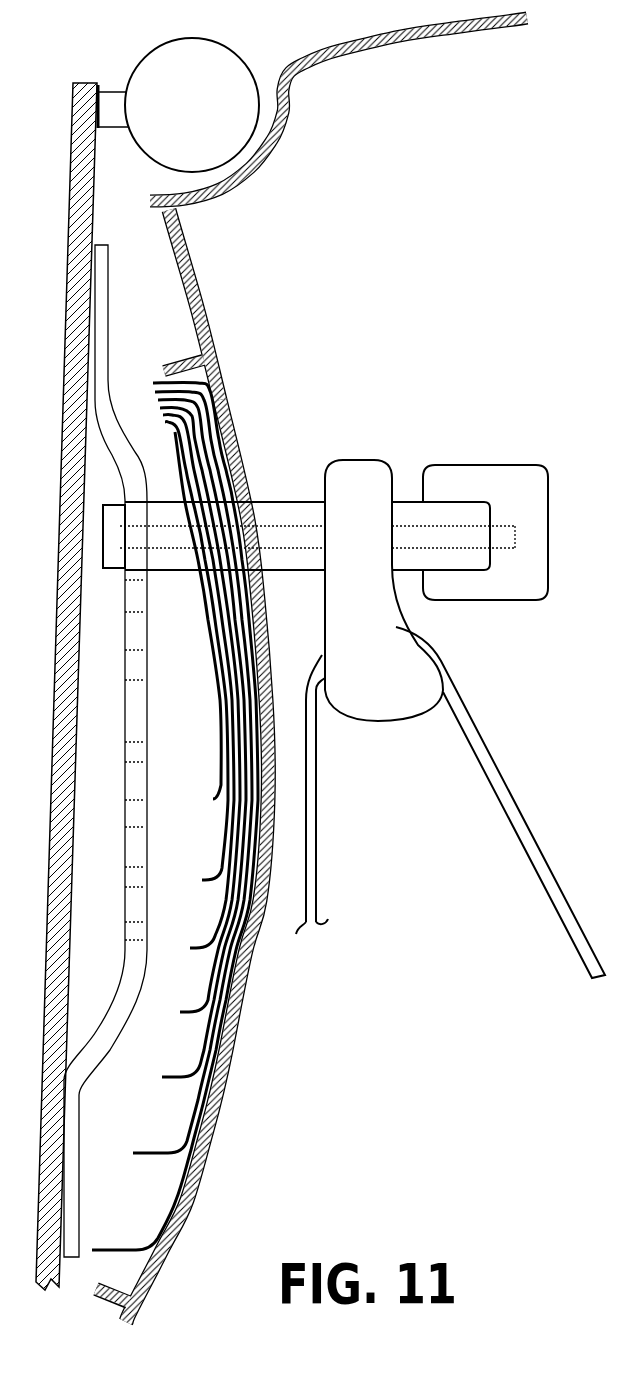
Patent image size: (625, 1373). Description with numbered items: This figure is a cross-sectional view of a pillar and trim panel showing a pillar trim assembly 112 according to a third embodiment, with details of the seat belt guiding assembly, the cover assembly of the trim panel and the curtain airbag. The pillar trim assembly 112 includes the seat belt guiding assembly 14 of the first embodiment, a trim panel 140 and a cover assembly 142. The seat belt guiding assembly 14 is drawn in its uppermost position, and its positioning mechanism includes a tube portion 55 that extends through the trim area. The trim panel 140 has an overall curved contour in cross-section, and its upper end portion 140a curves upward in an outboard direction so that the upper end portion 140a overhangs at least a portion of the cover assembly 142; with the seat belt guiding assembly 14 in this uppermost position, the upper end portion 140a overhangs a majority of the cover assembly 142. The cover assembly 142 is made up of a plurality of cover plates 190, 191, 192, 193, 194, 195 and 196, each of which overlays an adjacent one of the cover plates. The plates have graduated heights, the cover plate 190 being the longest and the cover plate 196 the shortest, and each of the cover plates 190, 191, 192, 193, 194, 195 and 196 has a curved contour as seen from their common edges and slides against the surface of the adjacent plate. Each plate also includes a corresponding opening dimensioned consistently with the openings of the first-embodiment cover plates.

The pillar trim assembly 112 is at (483, 307).
The seat belt guiding assembly 14 is at (494, 462).
The tube portion 55 is at (264, 500).
The trim panel 140 is at (240, 386).
The upper end portion 140a is at (197, 273).
The cover assembly 142 is at (175, 816).
The cover plate 190 is at (163, 1214).
The cover plate 191 is at (183, 1140).
The cover plate 192 is at (203, 1048).
The cover plate 193 is at (213, 990).
The cover plate 194 is at (222, 914).
The cover plate 195 is at (226, 826).
The cover plate 196 is at (219, 749).